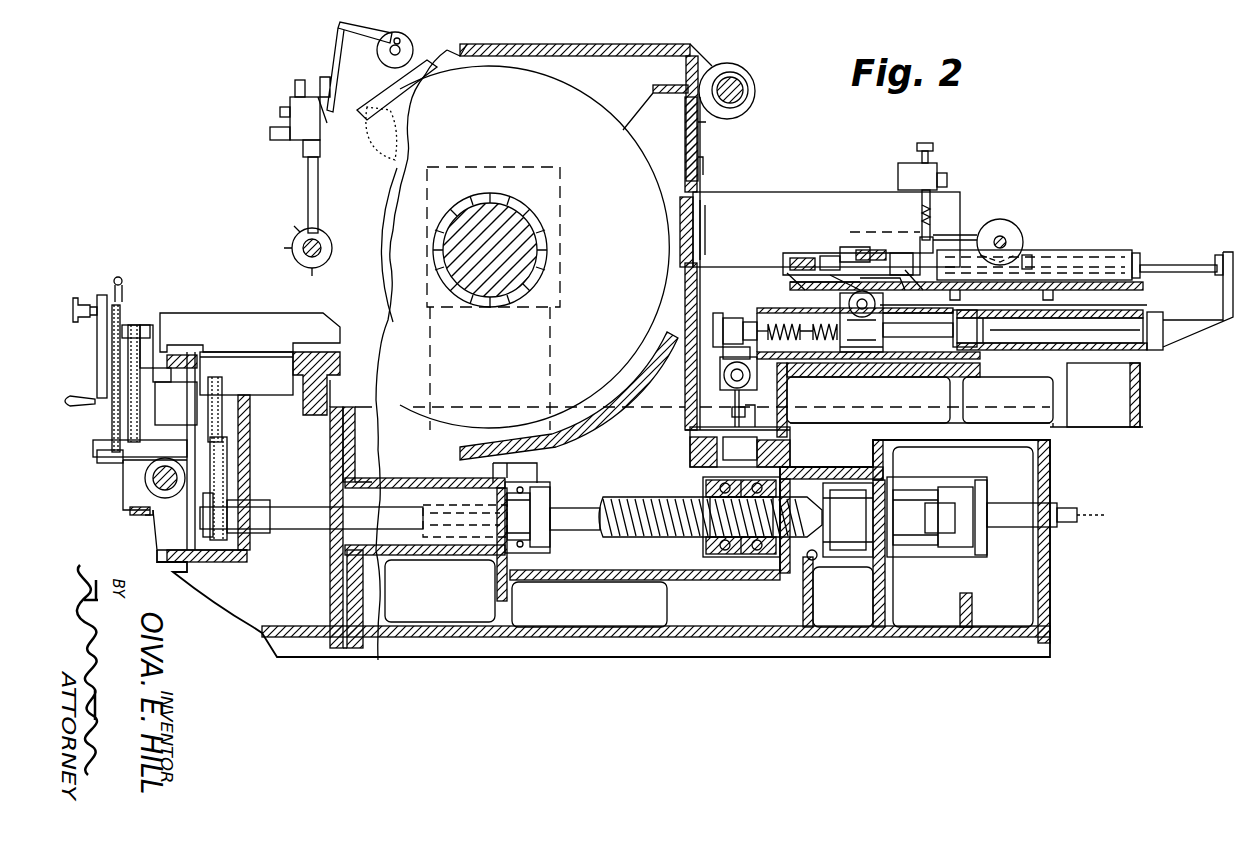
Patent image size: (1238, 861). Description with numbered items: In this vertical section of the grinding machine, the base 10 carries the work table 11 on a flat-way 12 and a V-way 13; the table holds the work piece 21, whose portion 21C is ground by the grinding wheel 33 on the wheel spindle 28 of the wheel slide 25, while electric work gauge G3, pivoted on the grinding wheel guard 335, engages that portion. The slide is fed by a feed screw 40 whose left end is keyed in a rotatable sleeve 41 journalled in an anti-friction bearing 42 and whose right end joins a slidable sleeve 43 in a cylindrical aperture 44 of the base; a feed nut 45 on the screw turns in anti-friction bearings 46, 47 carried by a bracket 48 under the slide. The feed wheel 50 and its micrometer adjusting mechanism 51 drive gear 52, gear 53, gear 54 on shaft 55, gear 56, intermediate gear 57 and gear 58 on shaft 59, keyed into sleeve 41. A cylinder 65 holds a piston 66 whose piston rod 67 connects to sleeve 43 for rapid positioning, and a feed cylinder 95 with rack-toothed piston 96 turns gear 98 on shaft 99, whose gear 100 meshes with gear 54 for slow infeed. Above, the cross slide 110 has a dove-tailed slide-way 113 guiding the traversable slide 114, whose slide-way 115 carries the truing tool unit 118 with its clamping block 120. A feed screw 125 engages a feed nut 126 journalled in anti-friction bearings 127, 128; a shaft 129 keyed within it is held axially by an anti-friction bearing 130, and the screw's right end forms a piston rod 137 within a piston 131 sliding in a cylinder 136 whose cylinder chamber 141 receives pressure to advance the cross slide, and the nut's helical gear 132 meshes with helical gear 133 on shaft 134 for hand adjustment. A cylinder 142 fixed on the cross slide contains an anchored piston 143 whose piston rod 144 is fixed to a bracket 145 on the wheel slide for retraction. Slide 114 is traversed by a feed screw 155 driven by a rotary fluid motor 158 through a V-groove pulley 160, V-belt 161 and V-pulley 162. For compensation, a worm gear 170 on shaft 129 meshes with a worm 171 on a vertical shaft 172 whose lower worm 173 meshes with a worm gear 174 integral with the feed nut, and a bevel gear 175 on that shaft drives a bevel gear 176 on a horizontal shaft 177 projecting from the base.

The base 10 is at (270, 642).
The work table 11 is at (238, 312).
The flat-way 12 is at (180, 354).
The V-way 13 is at (302, 340).
The work piece 21 is at (322, 260).
The spaced portion 21C is at (322, 250).
The wheel slide 25 is at (1099, 434).
The wheel spindle 28 is at (455, 235).
The grinding wheel 33 is at (378, 240).
The grinding wheel guard 335 is at (382, 97).
The electric work gauge G3 is at (306, 225).
The feed screw 40 is at (660, 538).
The rotatable sleeve 41 is at (477, 532).
The anti-friction bearing 42 is at (527, 580).
The slidably mounted sleeve 43 is at (855, 540).
The cylindrical aperture 44 is at (812, 560).
The feed nut 45 is at (725, 557).
The anti-friction bearing 46 is at (712, 557).
The anti-friction bearing 47 is at (758, 560).
The bracket 48 is at (768, 452).
The feed wheel 50 is at (100, 384).
The micrometer adjusting mechanism 51 is at (84, 298).
The gear 52 is at (112, 300).
The gear 53 is at (134, 323).
The gear 54 is at (120, 408).
The rotatable shaft 55 is at (150, 397).
The gear 56 is at (222, 380).
The intermediate gear 57 is at (227, 448).
The gear 58 is at (233, 563).
The rotatable shaft 59 is at (305, 529).
The cylinder 65 is at (918, 490).
The piston 66 is at (955, 495).
The piston rod 67 is at (922, 520).
The feed cylinder 95 is at (135, 505).
The piston 96 is at (147, 517).
The gear 98 is at (145, 480).
The rotatable shaft 99 is at (100, 444).
The gear 100 is at (122, 468).
The cross slide 110 is at (1123, 288).
The dove-tailed slide-way 113 is at (840, 250).
The longitudinally traversable slide 114 is at (787, 273).
The dove-tailed slide-way 115 is at (781, 255).
The truing tool unit 118 is at (798, 190).
The clamping block 120 is at (926, 258).
The feed screw 125 is at (778, 300).
The feed nut 126 is at (857, 358).
The anti-friction bearing 127 is at (835, 358).
The anti-friction bearing 128 is at (884, 358).
The shaft 129 is at (766, 333).
The anti-friction bearing 130 is at (720, 300).
The piston 131 is at (987, 364).
The helical gear 132 is at (872, 358).
The helical gear 133 is at (888, 285).
The rotatable shaft 134 is at (833, 284).
The cylinder 136 is at (1090, 342).
The piston rod 137 is at (902, 332).
The cylinder chamber 141 is at (1133, 335).
The cylinder 142 is at (1090, 250).
The piston 143 is at (1031, 253).
The piston rod 144 is at (1167, 265).
The bracket 145 is at (1228, 254).
The feed screw 155 is at (841, 246).
The rotary type fluid motor 158 is at (1023, 250).
The V-groove pulley 160 is at (1007, 232).
The V-belt 161 is at (960, 234).
The V-pulley 162 is at (865, 232).
The worm gear 170 is at (758, 321).
The worm 171 is at (735, 316).
The vertical shaft 172 is at (695, 453).
The worm 173 is at (703, 503).
The worm gear 174 is at (740, 557).
The bevel gear 175 is at (720, 380).
The bevel gear 176 is at (732, 405).
The horizontally arranged shaft 177 is at (745, 414).